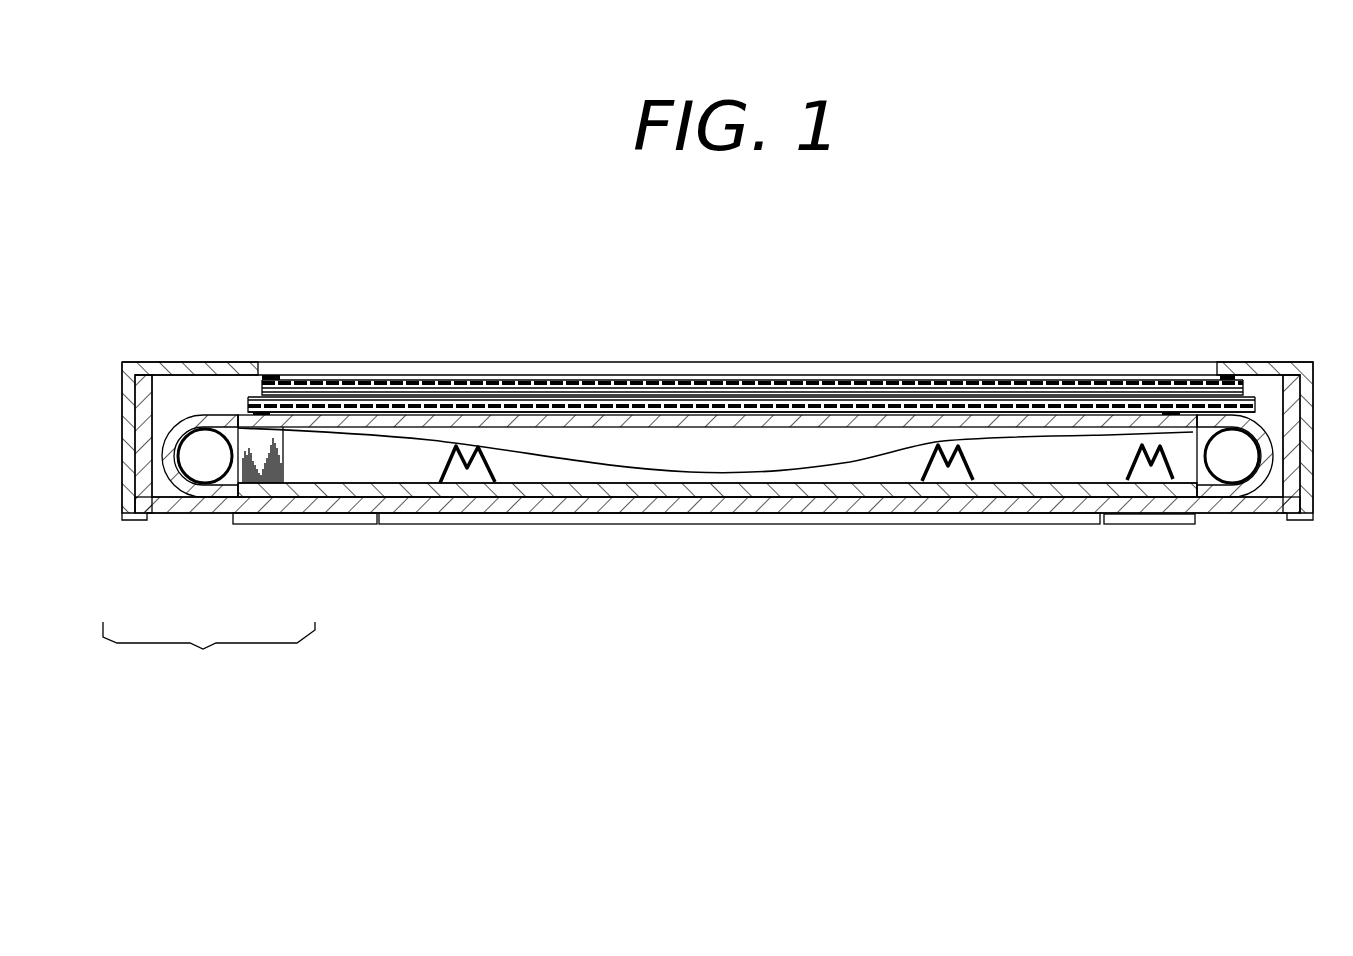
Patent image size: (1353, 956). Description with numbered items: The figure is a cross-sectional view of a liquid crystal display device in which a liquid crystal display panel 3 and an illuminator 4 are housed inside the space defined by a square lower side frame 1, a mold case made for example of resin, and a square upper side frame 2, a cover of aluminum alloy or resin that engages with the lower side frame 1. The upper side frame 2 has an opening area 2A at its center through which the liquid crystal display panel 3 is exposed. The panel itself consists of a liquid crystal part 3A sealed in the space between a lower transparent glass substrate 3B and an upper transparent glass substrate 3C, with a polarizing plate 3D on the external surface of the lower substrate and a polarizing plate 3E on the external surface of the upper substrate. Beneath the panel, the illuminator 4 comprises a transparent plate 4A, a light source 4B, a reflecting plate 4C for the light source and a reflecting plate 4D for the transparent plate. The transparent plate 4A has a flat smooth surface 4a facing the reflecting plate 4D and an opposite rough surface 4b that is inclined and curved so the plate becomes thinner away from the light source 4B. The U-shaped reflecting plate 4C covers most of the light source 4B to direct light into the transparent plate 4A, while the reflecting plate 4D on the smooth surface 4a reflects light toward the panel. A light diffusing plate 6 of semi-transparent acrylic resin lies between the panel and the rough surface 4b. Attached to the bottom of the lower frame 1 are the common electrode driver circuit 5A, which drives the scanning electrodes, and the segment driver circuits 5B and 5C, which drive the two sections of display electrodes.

The lower side frame 1 is at (1257, 505).
The upper side frame 2 is at (1266, 370).
The opening area 2A is at (1207, 365).
The liquid crystal display panel 3 is at (751, 323).
The liquid crystal part 3A is at (608, 392).
The lower transparent glass substrate 3B is at (545, 398).
The upper transparent glass substrate 3C is at (660, 382).
The polarizing plate 3D is at (742, 307).
The polarizing plate 3E is at (723, 378).
The illuminator 4 is at (209, 658).
The transparent plate 4A is at (297, 470).
The light source 4B is at (202, 470).
The reflecting plate for light source 4C is at (172, 483).
The reflecting plate for transparent plate 4D is at (320, 485).
The smooth surface 4a is at (900, 483).
The rough surface 4b is at (1048, 438).
The common electrode driver circuit 5A is at (433, 520).
The segment driver circuit 5B is at (333, 520).
The segment driver circuit 5C is at (1125, 522).
The light diffusing plate 6 is at (876, 418).